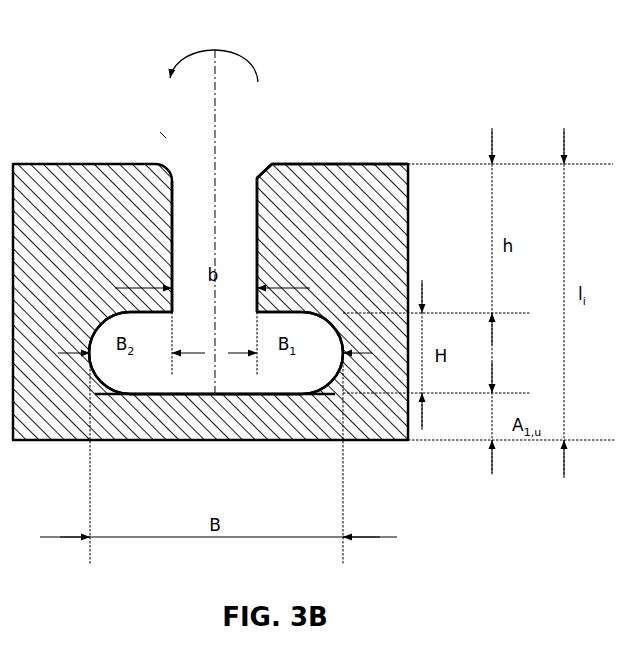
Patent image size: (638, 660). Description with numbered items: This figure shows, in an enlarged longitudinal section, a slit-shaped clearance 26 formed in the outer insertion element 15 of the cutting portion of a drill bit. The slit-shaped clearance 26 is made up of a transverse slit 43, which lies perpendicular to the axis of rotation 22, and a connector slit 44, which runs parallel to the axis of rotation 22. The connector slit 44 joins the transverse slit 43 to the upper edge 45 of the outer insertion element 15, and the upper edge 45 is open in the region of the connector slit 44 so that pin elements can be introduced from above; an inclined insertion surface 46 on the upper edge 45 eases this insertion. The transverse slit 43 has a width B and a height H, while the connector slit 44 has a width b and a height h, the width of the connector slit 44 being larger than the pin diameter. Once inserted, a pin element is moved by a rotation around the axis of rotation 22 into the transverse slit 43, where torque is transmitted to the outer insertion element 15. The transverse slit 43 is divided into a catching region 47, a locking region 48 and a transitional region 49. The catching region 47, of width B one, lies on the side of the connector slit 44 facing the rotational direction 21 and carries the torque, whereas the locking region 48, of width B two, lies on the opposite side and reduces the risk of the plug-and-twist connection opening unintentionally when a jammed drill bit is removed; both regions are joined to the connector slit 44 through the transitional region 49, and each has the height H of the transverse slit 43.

The outer insertion element 15 is at (58, 183).
The rotational direction 21 is at (214, 52).
The axis of rotation 22 is at (218, 237).
The slit-shaped clearance 26 is at (166, 139).
The transverse slit 43 is at (106, 312).
The connector slit 44 is at (193, 201).
The upper edge 45 is at (372, 163).
The inclined insertion surface 46 is at (262, 173).
The catching region 47 is at (298, 396).
The locking region 48 is at (133, 396).
The transitional region 49 is at (217, 396).